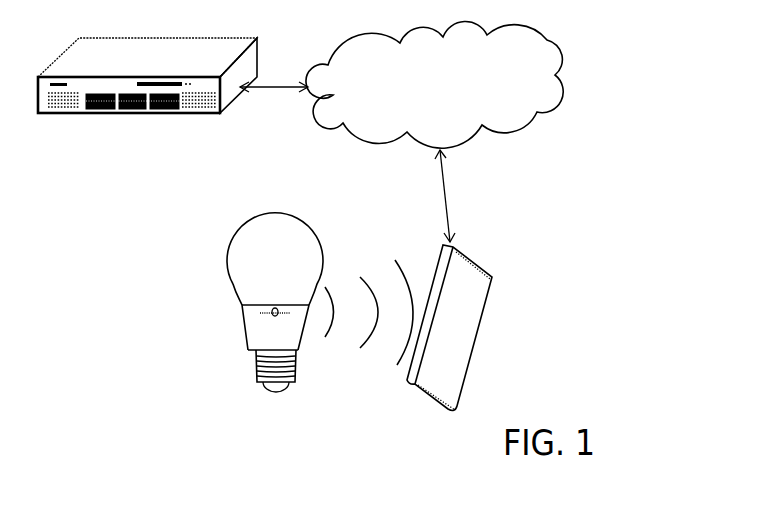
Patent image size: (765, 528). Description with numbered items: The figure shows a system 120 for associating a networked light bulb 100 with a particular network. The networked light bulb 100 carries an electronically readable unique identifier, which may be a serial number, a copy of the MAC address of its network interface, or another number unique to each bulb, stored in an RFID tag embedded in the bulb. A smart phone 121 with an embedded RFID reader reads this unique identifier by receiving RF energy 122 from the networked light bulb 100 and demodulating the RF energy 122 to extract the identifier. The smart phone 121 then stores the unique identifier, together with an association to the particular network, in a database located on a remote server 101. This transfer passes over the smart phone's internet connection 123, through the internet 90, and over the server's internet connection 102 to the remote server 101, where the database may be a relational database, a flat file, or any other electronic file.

The internet 90 is at (519, 70).
The networked light bulb 100 is at (227, 252).
The remote server 101 is at (172, 67).
The server's internet connection 102 is at (277, 82).
The system 120 is at (612, 82).
The smart phone 121 is at (482, 320).
The RF energy 122 is at (348, 369).
The smart phone's internet connection 123 is at (447, 190).